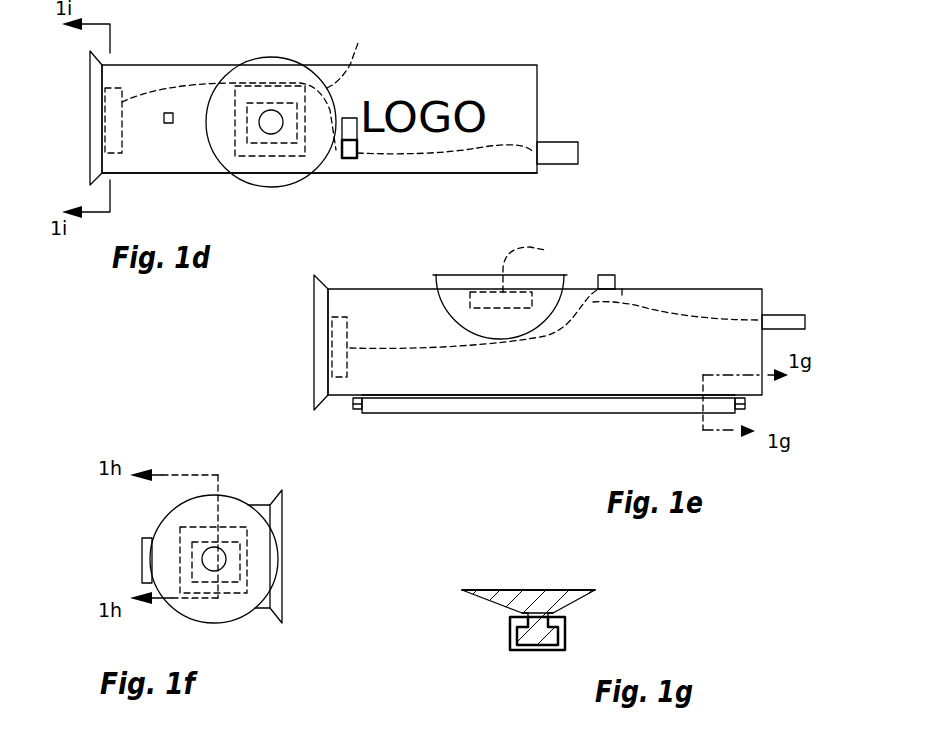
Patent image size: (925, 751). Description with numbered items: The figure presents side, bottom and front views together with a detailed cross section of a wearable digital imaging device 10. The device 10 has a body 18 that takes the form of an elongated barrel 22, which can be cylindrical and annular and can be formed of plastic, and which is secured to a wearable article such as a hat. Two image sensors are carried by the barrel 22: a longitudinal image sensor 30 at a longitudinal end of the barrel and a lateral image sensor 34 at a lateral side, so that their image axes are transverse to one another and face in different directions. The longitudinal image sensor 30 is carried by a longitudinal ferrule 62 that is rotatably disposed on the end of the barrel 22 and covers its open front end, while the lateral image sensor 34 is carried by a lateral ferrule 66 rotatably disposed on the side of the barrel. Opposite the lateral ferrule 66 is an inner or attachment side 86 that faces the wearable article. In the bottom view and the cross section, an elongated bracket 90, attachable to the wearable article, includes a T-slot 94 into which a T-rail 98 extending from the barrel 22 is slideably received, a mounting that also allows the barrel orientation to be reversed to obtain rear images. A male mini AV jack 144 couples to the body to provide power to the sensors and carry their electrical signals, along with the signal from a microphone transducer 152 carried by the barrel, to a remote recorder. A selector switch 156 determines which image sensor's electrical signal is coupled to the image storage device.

In FIG. 1D, the digital imaging device 10 is at (394, 124).
In FIG. 1E, the digital imaging device 10 is at (537, 441).
In FIG. 1F, the digital imaging device 10 is at (243, 470).
In FIG. 1D, the body 18 is at (319, 142).
In FIG. 1G, the body 18 is at (578, 590).
In FIG. 1D, the elongated barrel 22 is at (446, 174).
In FIG. 1G, the elongated barrel 22 is at (503, 590).
In FIG. 1D, the longitudinal image sensor 30 is at (123, 133).
In FIG. 1E, the longitudinal image sensor 30 is at (323, 370).
In FIG. 1F, the longitudinal image sensor 30 is at (257, 582).
In FIG. 1D, the lateral image sensor 34 is at (349, 51).
In FIG. 1E, the lateral image sensor 34 is at (536, 268).
In FIG. 1D, the longitudinal ferrule 62 is at (90, 75).
In FIG. 1E, the longitudinal ferrule 62 is at (314, 303).
In FIG. 1F, the longitudinal ferrule 62 is at (236, 622).
In FIG. 1D, the lateral ferrule 66 is at (257, 53).
In FIG. 1E, the lateral ferrule 66 is at (455, 275).
In FIG. 1F, the lateral ferrule 66 is at (284, 508).
In FIG. 1E, the attachment side 86 is at (460, 397).
In FIG. 1G, the attachment side 86 is at (580, 603).
In FIG. 1E, the elongated bracket 90 is at (598, 411).
In FIG. 1G, the elongated bracket 90 is at (510, 675).
In FIG. 1G, the T-slot 94 is at (527, 646).
In FIG. 1E, the T-rail 98 is at (352, 411).
In FIG. 1G, the T-rail 98 is at (537, 633).
In FIG. 1D, the male mini AV jack 144 is at (560, 135).
In FIG. 1E, the male mini AV jack 144 is at (787, 313).
In FIG. 1F, the male mini AV jack 144 is at (147, 560).
In FIG. 1D, the microphone transducer 152 is at (169, 113).
In FIG. 1D, the selector switch 156 is at (349, 158).
In FIG. 1E, the selector switch 156 is at (605, 275).